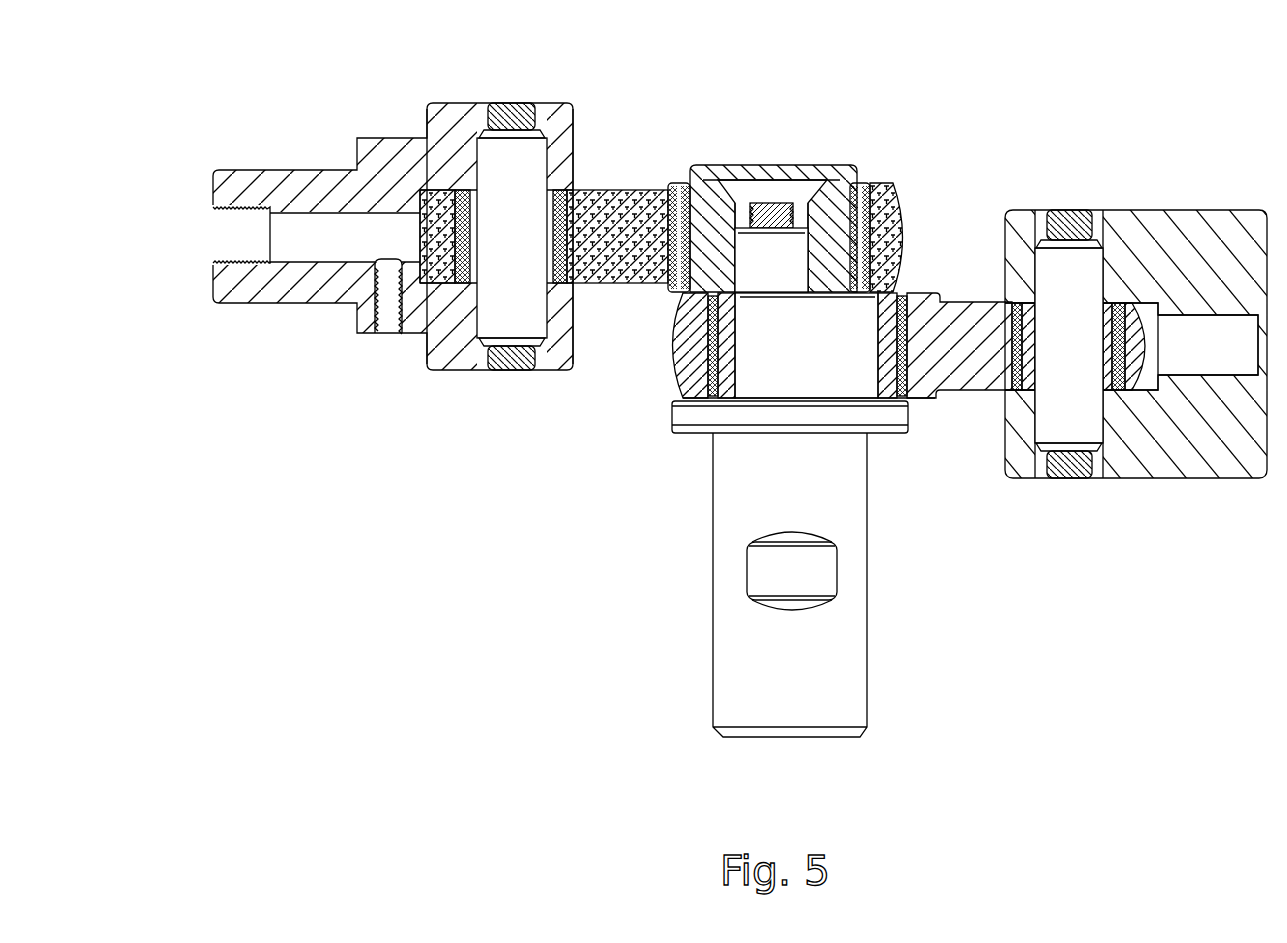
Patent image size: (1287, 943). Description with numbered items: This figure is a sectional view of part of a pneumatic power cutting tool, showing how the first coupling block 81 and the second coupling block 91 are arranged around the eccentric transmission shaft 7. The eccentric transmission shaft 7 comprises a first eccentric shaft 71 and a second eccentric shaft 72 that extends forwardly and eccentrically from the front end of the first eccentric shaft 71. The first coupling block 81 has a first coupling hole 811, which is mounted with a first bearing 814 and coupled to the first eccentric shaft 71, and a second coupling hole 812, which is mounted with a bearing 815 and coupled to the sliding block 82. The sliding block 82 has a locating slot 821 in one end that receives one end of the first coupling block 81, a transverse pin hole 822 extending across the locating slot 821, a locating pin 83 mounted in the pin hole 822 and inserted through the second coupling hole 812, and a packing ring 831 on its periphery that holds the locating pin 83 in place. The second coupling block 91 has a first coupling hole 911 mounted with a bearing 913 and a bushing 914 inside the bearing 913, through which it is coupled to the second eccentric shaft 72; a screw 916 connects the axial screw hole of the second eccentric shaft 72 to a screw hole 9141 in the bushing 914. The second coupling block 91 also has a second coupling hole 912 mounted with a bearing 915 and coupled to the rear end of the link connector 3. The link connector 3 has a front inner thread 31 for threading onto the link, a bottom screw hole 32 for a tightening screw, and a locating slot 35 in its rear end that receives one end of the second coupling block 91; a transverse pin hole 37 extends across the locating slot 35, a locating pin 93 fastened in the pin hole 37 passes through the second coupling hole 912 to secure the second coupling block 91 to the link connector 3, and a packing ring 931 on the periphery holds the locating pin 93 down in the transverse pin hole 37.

The link connector 3 is at (393, 303).
The front inner thread 31 is at (229, 272).
The bottom screw hole 32 is at (358, 337).
The locating slot 35 is at (571, 372).
The transverse pin hole 37 is at (460, 330).
The eccentric transmission shaft 7 is at (769, 419).
The first eccentric shaft 71 is at (862, 392).
The second eccentric shaft 72 is at (748, 263).
The first coupling block 81 is at (819, 390).
The first coupling hole 811 is at (705, 395).
The second coupling hole 812 is at (1122, 410).
The first bearing 814 is at (705, 360).
The bearing 815 is at (1137, 307).
The sliding block 82 is at (1102, 382).
The locating slot 821 is at (1160, 405).
The transverse pin hole 822 is at (1040, 427).
The locating pin 83 is at (1031, 391).
The packing ring 831 is at (1068, 470).
The second coupling block 91 is at (675, 159).
The first coupling hole 911 is at (873, 205).
The second coupling hole 912 is at (447, 213).
The bearing 913 is at (897, 217).
The bushing 914 is at (794, 169).
The screw hole 9141 is at (737, 213).
The bearing 915 is at (445, 215).
The screw 916 is at (770, 203).
The locating pin 93 is at (487, 323).
The packing ring 931 is at (513, 358).